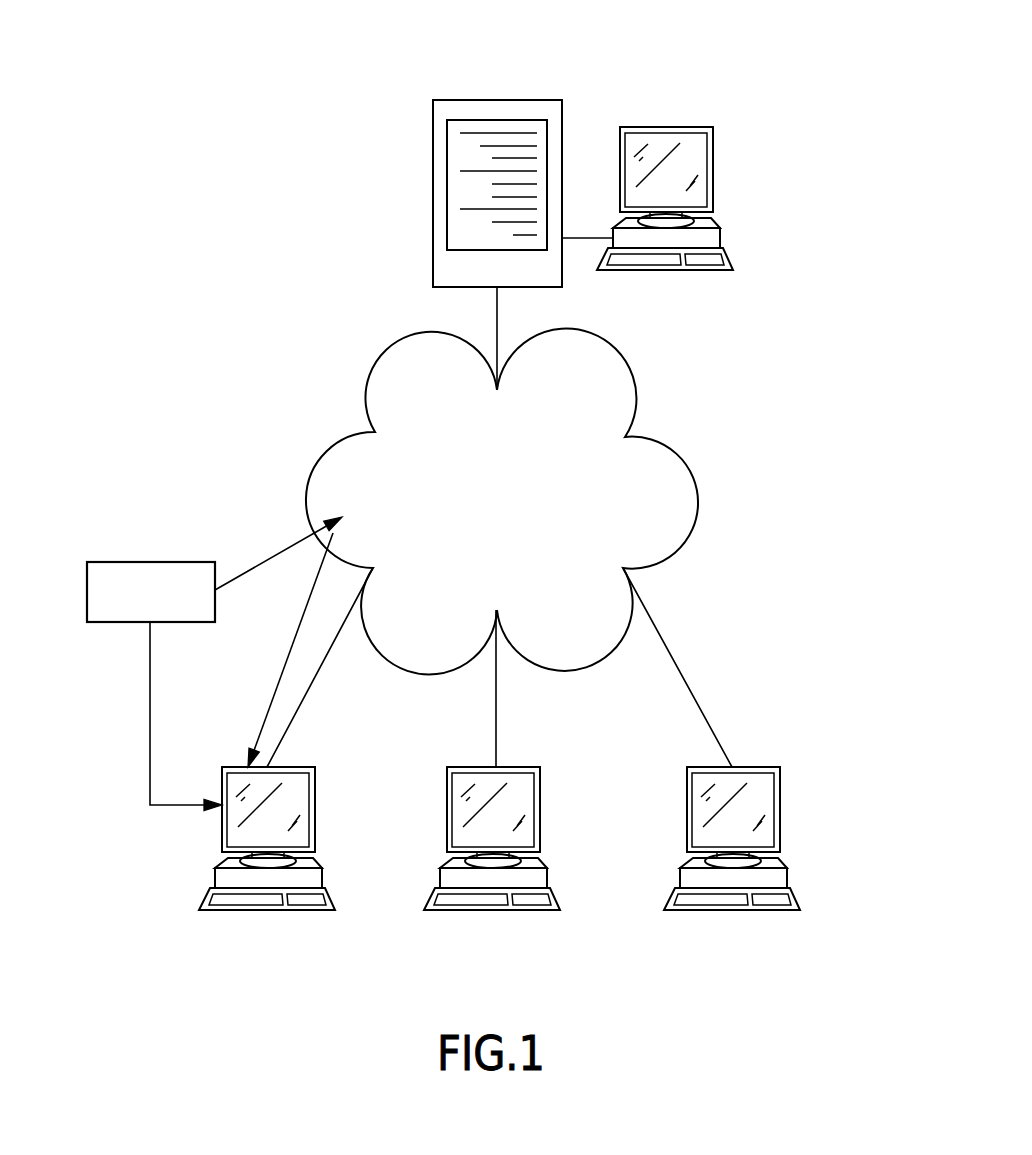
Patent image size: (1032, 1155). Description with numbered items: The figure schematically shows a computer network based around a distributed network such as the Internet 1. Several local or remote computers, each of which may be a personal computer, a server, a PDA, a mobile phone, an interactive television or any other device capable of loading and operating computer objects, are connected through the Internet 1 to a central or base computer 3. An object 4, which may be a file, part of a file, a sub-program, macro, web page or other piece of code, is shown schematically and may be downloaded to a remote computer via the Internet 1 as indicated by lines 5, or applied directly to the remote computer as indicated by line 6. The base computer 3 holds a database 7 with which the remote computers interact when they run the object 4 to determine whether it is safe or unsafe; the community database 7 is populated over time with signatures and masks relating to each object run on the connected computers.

The Internet 1 is at (490, 540).
The base computer 3 is at (660, 80).
The object 4 is at (133, 562).
The lines 5 is at (255, 569).
The line 6 is at (150, 702).
The database 7 is at (447, 158).